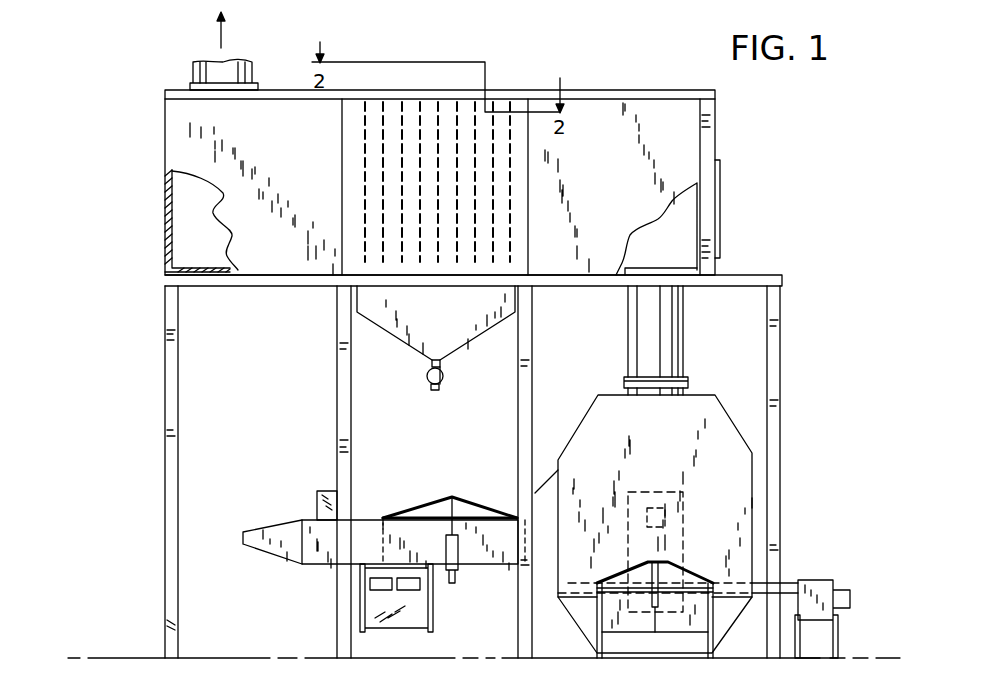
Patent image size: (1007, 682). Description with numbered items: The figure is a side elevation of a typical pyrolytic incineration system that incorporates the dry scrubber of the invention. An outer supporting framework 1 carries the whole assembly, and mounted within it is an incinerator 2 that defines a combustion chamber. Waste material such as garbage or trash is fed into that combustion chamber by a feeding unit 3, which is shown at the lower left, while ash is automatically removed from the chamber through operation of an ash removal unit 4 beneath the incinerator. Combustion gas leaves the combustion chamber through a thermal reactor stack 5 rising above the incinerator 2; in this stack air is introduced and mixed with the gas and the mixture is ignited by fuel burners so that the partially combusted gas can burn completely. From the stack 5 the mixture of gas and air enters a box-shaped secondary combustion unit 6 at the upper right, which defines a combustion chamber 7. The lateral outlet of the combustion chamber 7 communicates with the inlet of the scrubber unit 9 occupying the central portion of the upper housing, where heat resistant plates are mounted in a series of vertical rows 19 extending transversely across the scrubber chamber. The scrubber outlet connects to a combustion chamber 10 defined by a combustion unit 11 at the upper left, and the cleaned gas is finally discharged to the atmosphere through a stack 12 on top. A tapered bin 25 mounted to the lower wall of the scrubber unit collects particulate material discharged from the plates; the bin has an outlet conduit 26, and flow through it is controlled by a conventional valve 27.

The outer supporting framework 1 is at (160, 390).
The incinerator 2 is at (722, 408).
The feeding unit 3 is at (370, 521).
The ash removal unit 4 is at (641, 627).
The thermal reactor stack 5 is at (628, 322).
The secondary combustion unit 6 is at (640, 108).
The combustion chamber 7 is at (680, 232).
The scrubber unit 9 is at (499, 91).
The combustion chamber 10 is at (190, 198).
The combustion unit 11 is at (165, 141).
The stack 12 is at (195, 68).
The vertical rows 19 is at (435, 98).
The tapered bin 25 is at (473, 328).
The outlet conduit 26 is at (442, 366).
The valve 27 is at (428, 375).